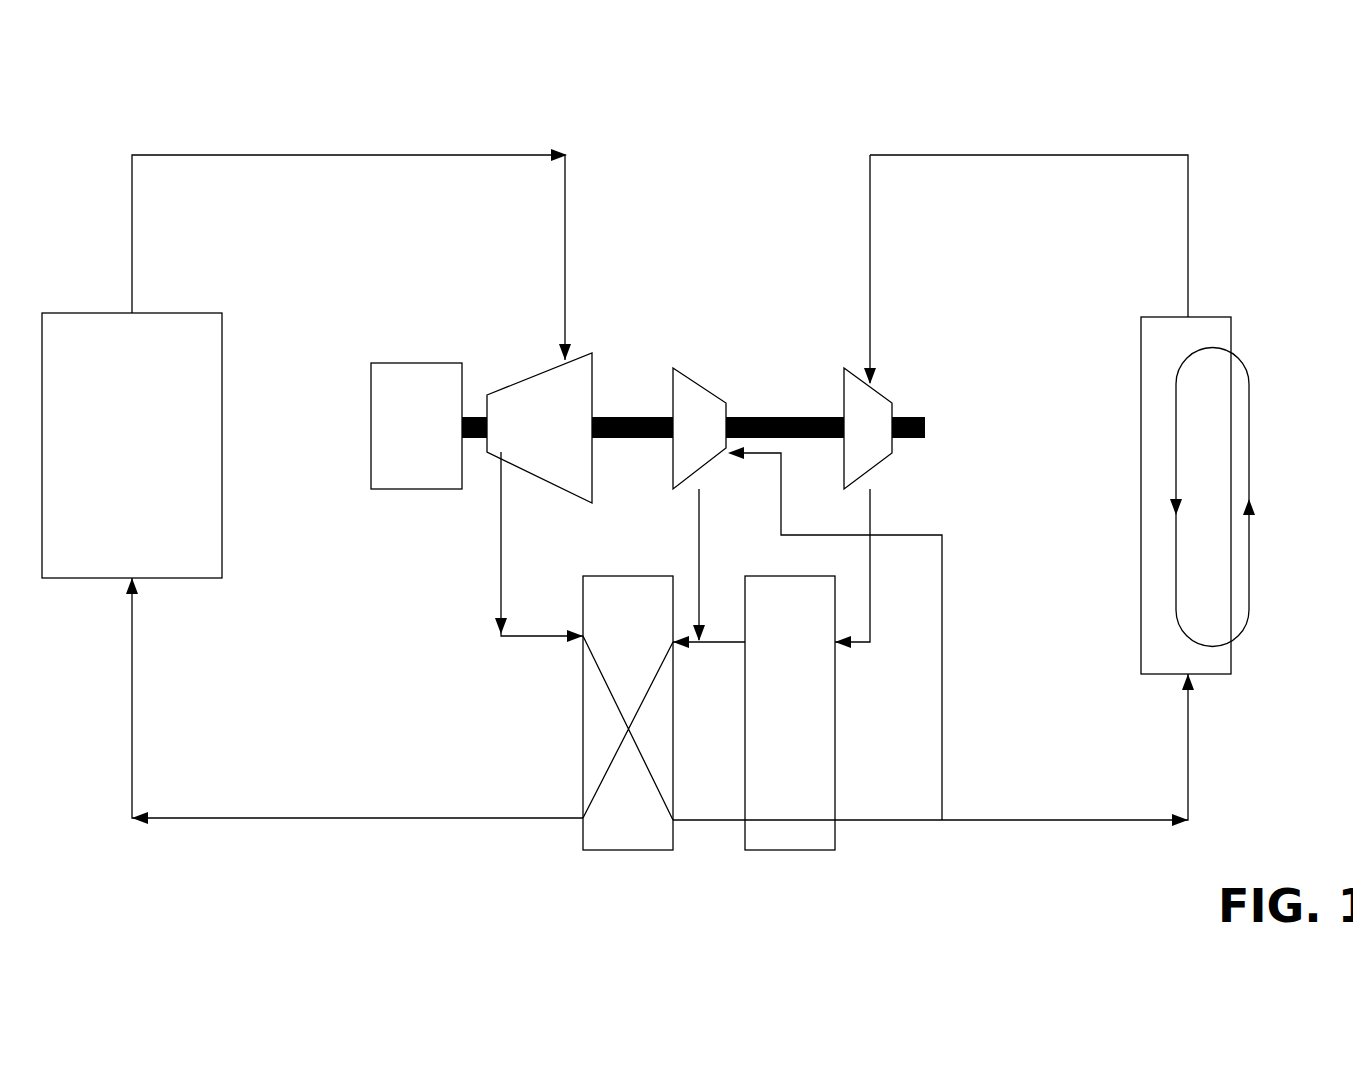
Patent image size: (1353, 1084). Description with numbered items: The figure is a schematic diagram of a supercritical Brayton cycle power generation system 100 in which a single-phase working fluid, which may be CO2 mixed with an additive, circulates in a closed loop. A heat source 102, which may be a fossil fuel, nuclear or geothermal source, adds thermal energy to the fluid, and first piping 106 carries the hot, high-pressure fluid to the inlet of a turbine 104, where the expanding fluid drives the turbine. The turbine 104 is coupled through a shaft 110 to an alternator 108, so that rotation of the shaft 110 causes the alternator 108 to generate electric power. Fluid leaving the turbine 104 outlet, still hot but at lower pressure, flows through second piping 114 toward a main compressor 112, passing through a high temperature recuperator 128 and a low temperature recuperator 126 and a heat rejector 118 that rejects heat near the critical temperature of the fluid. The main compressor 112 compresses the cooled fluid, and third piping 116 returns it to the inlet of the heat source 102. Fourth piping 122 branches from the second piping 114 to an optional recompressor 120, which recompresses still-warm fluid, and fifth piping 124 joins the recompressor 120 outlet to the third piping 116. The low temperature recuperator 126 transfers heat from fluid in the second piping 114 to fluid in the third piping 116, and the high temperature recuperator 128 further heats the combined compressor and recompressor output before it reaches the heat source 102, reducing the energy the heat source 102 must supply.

The supercritical Brayton cycle power generation system 100 is at (1228, 118).
The heat source 102 is at (187, 313).
The turbine 104 is at (538, 378).
The first piping 106 is at (367, 156).
The alternator 108 is at (401, 363).
The shaft 110 is at (605, 415).
The main compressor 112 is at (877, 390).
The second piping 114 is at (1035, 820).
The third piping 116 is at (870, 518).
The heat rejector 118 is at (1208, 317).
The recompressor 120 is at (686, 372).
The fourth piping 122 is at (942, 607).
The fifth piping 124 is at (699, 535).
The low temperature recuperator 126 is at (835, 680).
The high temperature recuperator 128 is at (583, 700).